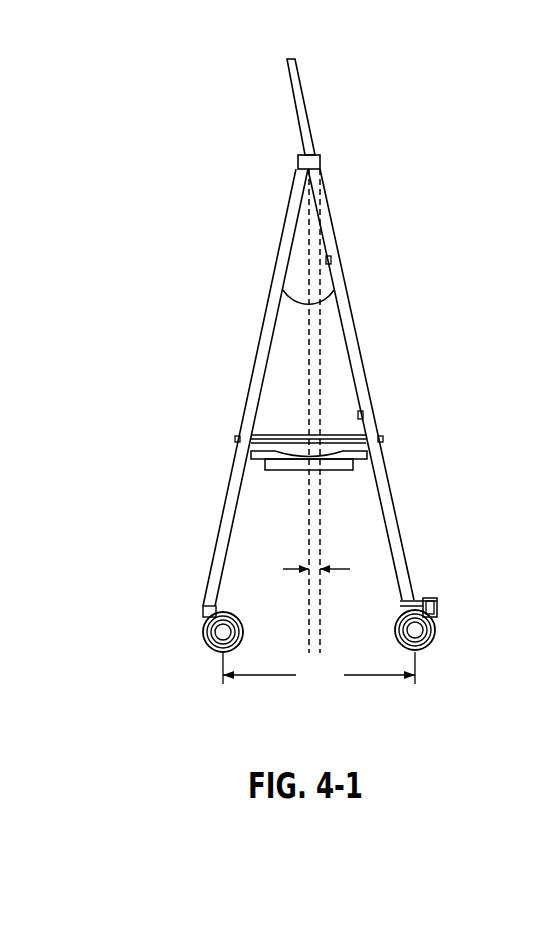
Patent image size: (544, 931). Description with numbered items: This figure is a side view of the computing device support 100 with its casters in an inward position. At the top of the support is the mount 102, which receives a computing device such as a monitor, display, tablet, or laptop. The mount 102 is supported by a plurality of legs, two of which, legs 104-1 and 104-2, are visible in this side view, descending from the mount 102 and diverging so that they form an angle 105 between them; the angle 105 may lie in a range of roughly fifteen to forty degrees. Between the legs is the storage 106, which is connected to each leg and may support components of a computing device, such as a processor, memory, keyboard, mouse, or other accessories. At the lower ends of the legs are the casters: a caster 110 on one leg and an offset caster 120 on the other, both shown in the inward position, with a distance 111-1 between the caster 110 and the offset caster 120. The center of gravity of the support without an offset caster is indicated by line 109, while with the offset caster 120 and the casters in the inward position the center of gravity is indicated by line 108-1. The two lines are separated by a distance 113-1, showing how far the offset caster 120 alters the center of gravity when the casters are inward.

The computing device support 100 is at (456, 96).
The mount 102 is at (326, 116).
The leg 104-1 is at (395, 512).
The leg 104-2 is at (222, 516).
The angle 105 is at (301, 304).
The storage 106 is at (290, 420).
The line 108-1 is at (321, 624).
The line 109 is at (305, 624).
The caster 110 is at (156, 624).
The distance 111-1 is at (319, 668).
The distance 113-1 is at (336, 568).
The offset caster 120 is at (470, 625).